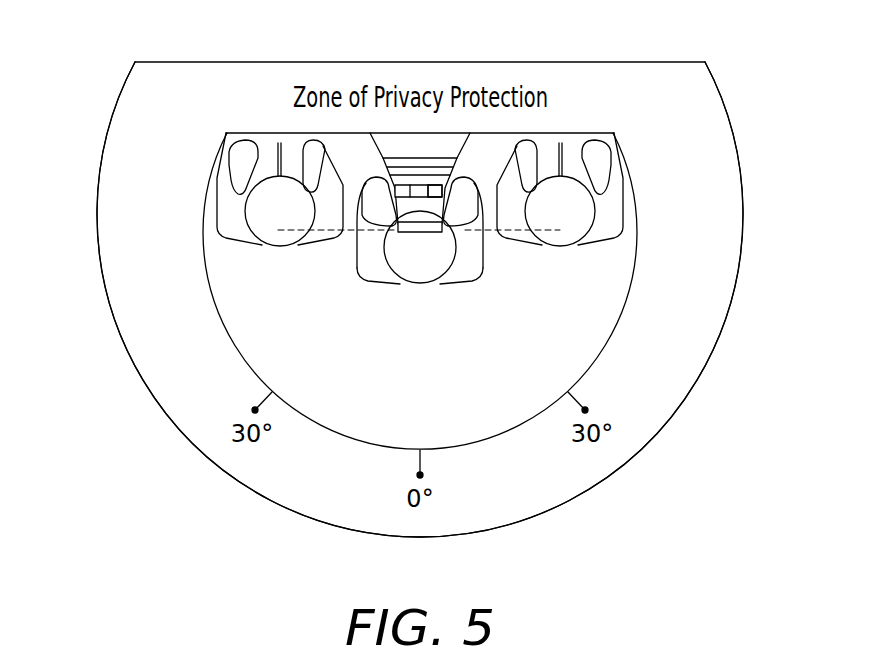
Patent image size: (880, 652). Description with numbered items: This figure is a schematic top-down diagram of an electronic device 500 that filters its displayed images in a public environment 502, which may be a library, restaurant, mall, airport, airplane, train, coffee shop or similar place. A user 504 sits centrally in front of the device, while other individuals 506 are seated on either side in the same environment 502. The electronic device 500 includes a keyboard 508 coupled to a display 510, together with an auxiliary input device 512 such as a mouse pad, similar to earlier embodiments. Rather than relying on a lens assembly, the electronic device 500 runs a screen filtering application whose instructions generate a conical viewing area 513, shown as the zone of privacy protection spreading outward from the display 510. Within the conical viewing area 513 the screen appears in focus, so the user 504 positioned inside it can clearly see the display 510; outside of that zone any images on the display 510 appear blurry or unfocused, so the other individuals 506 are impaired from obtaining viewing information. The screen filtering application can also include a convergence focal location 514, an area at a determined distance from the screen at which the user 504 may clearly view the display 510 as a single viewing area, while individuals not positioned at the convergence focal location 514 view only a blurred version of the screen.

The electronic device 500 is at (586, 50).
The environment 502 is at (767, 346).
The user 504 is at (470, 250).
The other individuals 506 is at (232, 193).
The keyboard 508 is at (450, 158).
The display 510 is at (405, 145).
The auxiliary input device 512 is at (418, 190).
The conical viewing area 513 is at (447, 197).
The convergence focal location 514 is at (418, 228).